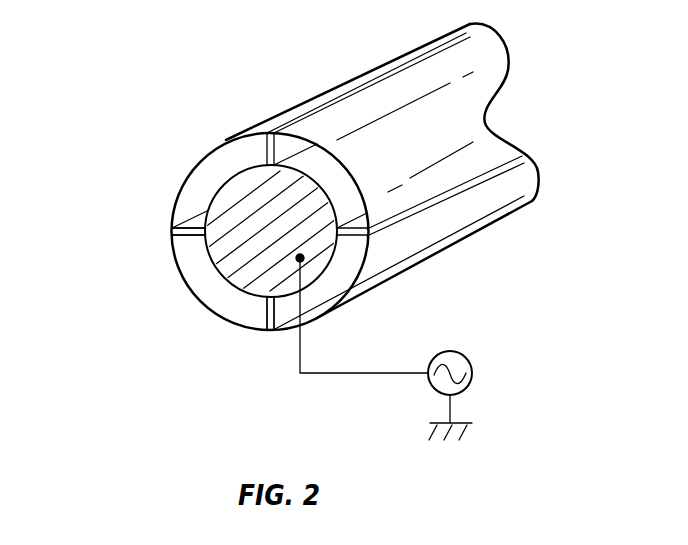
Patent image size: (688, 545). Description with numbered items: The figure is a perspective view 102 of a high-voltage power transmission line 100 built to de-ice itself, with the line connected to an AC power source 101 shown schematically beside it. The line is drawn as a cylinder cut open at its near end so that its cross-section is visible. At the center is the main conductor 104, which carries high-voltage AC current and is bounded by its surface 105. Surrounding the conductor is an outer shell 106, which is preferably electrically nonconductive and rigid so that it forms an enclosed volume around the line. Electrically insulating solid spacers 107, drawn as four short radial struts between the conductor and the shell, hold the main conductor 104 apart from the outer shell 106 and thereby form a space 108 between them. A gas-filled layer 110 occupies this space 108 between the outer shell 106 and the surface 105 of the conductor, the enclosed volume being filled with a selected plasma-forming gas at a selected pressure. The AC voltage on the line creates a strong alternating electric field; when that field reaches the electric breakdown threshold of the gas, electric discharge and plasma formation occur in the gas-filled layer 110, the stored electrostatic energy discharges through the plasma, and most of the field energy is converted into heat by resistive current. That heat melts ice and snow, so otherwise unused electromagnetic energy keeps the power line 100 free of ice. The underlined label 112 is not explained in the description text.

The power transmission line 100 is at (408, 82).
The AC power source 101 is at (472, 369).
The perspective view 102 is at (203, 95).
The main conductor 104 is at (240, 282).
The surface 105 is at (217, 190).
The outer shell 106 is at (428, 243).
The electrically insulating solid spacers 107 is at (193, 217).
The space 108 is at (200, 268).
The gas-filled layer 110 is at (241, 312).
The device 112 is at (300, 58).